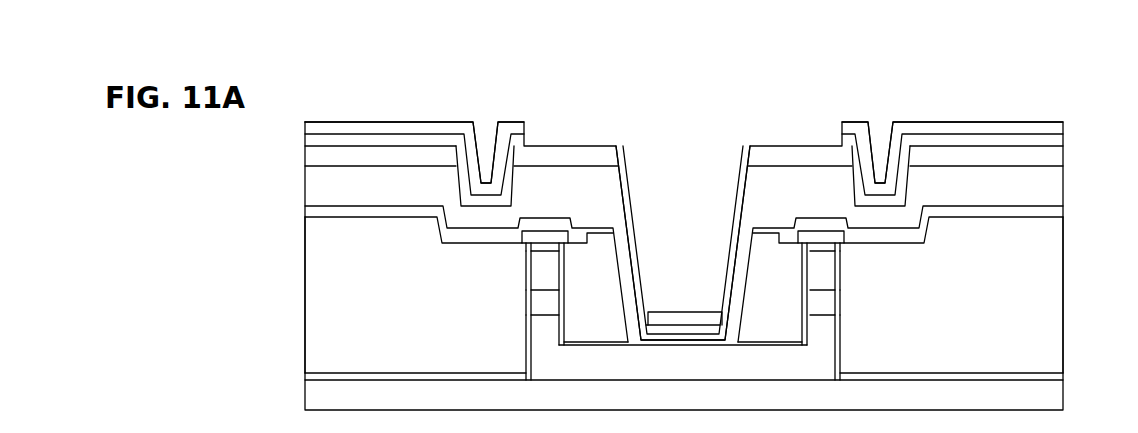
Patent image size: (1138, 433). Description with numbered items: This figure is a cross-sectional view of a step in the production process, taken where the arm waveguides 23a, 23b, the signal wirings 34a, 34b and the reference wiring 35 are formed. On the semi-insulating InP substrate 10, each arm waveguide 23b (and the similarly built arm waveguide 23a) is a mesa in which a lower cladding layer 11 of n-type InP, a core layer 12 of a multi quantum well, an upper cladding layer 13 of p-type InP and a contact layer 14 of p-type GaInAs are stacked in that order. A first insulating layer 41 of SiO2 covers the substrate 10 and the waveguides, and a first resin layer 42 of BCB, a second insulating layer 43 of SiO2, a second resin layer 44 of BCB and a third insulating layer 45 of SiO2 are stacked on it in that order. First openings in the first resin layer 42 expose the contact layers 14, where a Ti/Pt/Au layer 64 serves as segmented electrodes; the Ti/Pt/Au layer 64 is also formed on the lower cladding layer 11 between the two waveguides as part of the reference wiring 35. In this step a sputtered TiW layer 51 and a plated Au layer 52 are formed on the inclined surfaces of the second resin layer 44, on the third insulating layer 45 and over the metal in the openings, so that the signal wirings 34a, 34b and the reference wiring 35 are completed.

The substrate 10 is at (1060, 402).
The first insulating layer 41 is at (1060, 378).
The first resin layer 42 is at (1050, 336).
The second insulating layer 43 is at (1047, 214).
The second resin layer 44 is at (1047, 185).
The third insulating layer 45 is at (1047, 162).
The TiW layer 51 is at (345, 136).
The Au layer 52 is at (385, 129).
The Ti/Pt/Au layer 64 is at (657, 333).
The reference wiring 35 is at (682, 133).
The signal wiring 34a is at (915, 92).
The signal wiring 34b is at (454, 96).
The arm waveguide 23a is at (932, 253).
The arm waveguide 23b is at (578, 250).
The lower cladding layer 11 is at (527, 336).
The core layer 12 is at (527, 304).
The upper cladding layer 13 is at (527, 272).
The contact layer 14 is at (527, 246).